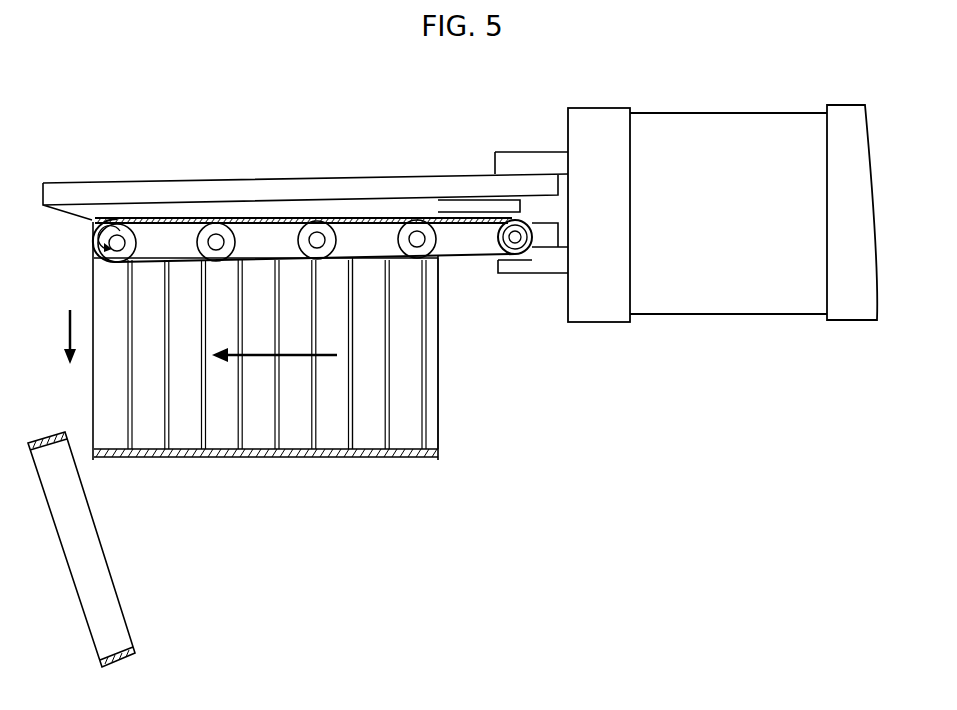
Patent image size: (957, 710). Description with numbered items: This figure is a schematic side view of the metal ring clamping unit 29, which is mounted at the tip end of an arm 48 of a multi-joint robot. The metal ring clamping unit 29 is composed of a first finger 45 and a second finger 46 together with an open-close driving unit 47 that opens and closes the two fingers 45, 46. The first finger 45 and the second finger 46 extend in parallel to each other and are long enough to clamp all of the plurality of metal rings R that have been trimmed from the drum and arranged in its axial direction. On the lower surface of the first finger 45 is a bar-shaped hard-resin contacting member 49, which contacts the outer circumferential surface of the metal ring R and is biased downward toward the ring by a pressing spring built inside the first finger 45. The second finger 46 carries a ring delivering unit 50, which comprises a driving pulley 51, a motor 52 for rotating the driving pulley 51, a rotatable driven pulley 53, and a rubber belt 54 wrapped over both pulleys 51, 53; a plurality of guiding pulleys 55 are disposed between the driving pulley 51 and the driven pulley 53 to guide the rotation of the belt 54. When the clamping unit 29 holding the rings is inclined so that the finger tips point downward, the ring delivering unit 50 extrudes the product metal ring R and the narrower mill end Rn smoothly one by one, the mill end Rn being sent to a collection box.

The metal ring clamping unit 29 is at (166, 78).
The first finger 45 is at (473, 188).
The second finger 46 is at (473, 240).
The open-close driving unit 47 is at (680, 296).
The arm 48 is at (848, 292).
The contacting member 49 is at (167, 208).
The ring delivering unit 50 is at (485, 277).
The driving pulley 51 is at (520, 220).
The motor 52 is at (529, 256).
The driven pulley 53 is at (120, 233).
The rubber belt 54 is at (364, 258).
The guiding pulleys 55 is at (218, 228).
The metal ring R is at (295, 458).
The mill end Rn is at (437, 458).